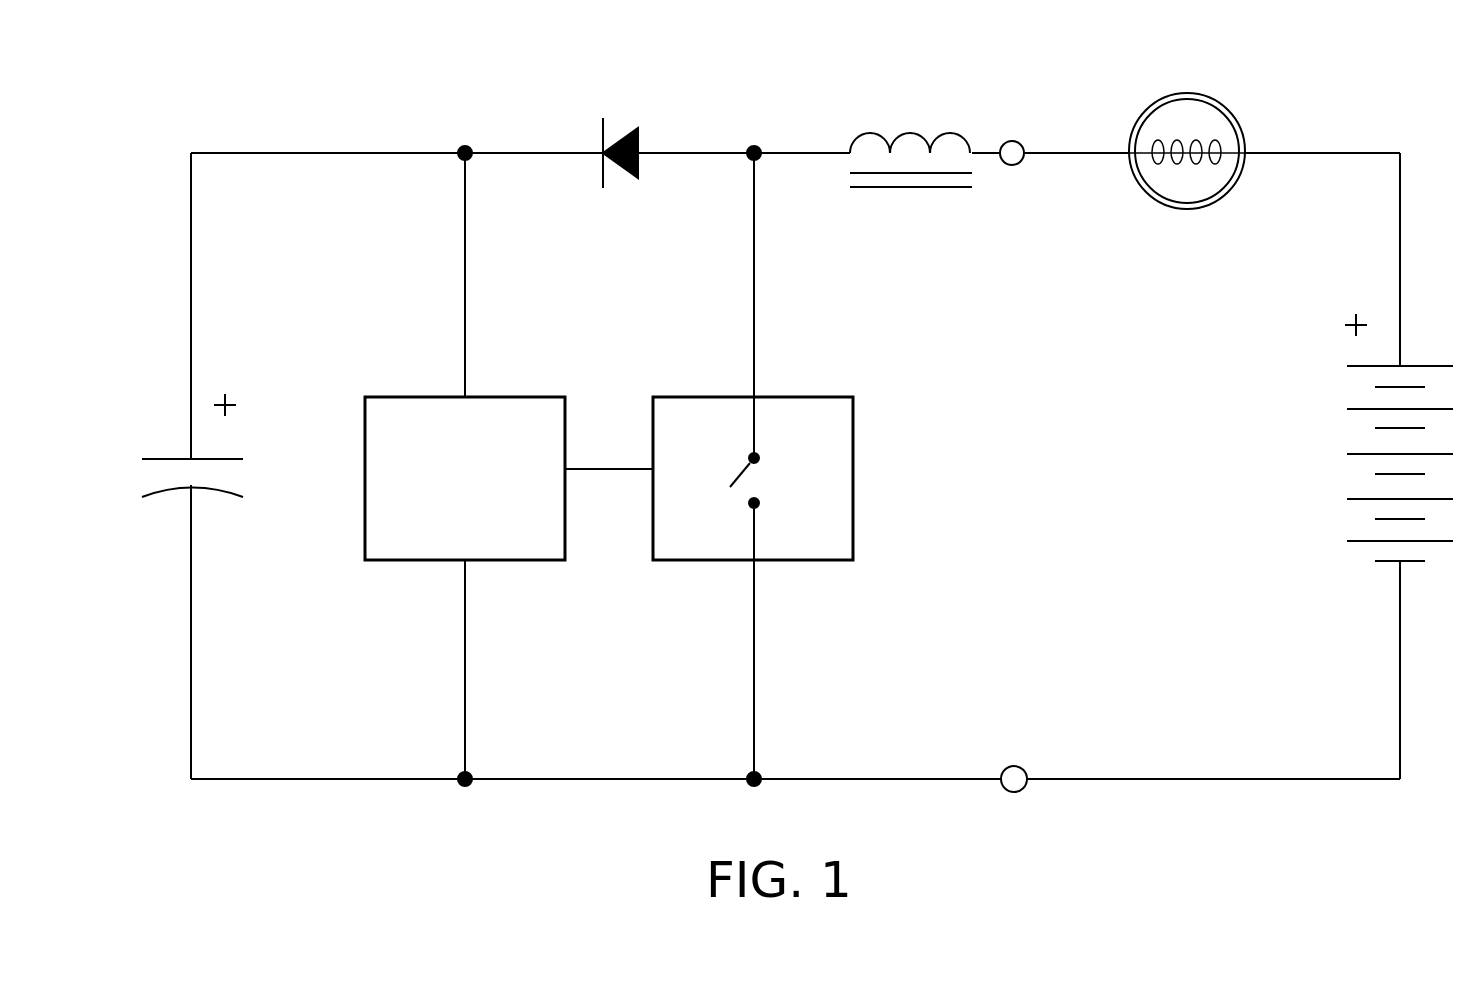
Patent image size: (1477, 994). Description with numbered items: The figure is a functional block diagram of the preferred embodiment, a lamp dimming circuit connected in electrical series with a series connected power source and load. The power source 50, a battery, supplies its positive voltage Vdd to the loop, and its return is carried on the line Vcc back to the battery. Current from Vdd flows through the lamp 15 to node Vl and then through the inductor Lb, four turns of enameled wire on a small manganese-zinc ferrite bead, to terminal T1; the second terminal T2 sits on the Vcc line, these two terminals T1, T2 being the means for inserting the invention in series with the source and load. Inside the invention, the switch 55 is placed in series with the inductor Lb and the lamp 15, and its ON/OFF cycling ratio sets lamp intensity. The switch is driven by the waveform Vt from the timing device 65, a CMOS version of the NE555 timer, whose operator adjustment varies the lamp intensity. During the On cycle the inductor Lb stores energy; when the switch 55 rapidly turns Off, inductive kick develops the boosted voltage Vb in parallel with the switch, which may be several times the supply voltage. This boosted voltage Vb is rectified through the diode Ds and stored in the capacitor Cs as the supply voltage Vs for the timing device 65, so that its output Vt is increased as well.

The stored supply voltage Vs is at (375, 153).
The diode rectifier Ds is at (630, 130).
The boosted voltage Vb is at (790, 150).
The inductor Lb is at (955, 130).
The terminal T1 is at (1012, 165).
The lamp voltage Vl is at (1103, 150).
The lamp 15 is at (1198, 108).
The power source positive Vdd is at (1330, 150).
The power source 50 is at (1363, 528).
The capacitor Cs is at (147, 478).
The timing device 65 is at (445, 538).
The switch 55 is at (742, 538).
The timing output voltage Vt is at (633, 467).
The terminal T2 is at (1012, 777).
The return node voltage Vcc is at (1120, 777).